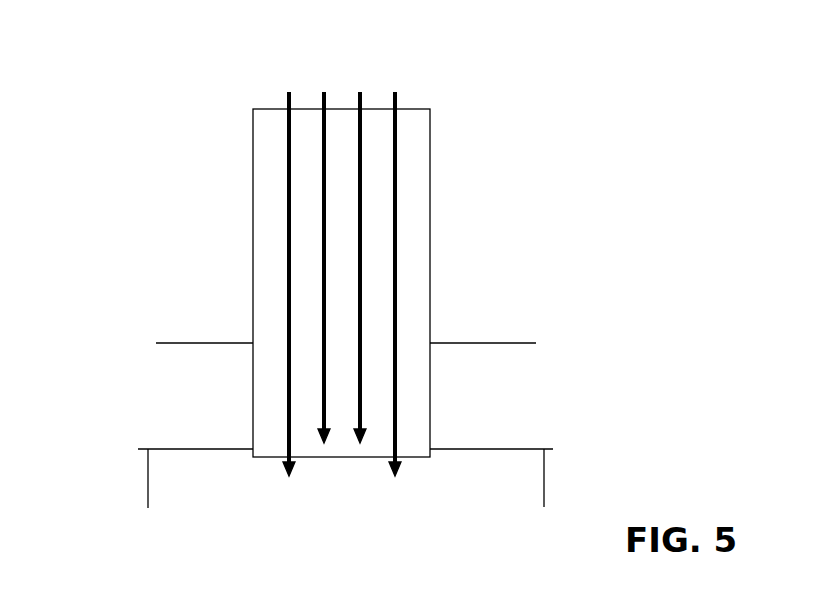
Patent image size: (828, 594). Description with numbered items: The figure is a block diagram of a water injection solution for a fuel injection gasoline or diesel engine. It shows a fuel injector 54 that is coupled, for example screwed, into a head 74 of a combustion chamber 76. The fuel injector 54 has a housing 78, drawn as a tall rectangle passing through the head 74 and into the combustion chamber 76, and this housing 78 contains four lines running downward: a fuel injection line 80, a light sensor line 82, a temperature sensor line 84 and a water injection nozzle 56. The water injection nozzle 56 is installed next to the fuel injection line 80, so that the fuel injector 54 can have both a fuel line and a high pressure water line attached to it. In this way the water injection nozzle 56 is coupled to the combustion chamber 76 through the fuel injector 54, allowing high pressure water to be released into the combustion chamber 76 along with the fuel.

The fuel injector 54 is at (128, 167).
The water injection nozzle 56 is at (289, 265).
The head 74 is at (209, 398).
The combustion chamber 76 is at (232, 511).
The housing 78 is at (430, 298).
The fuel injection line 80 is at (395, 198).
The light sensor line 82 is at (360, 100).
The temperature sensor line 84 is at (324, 100).